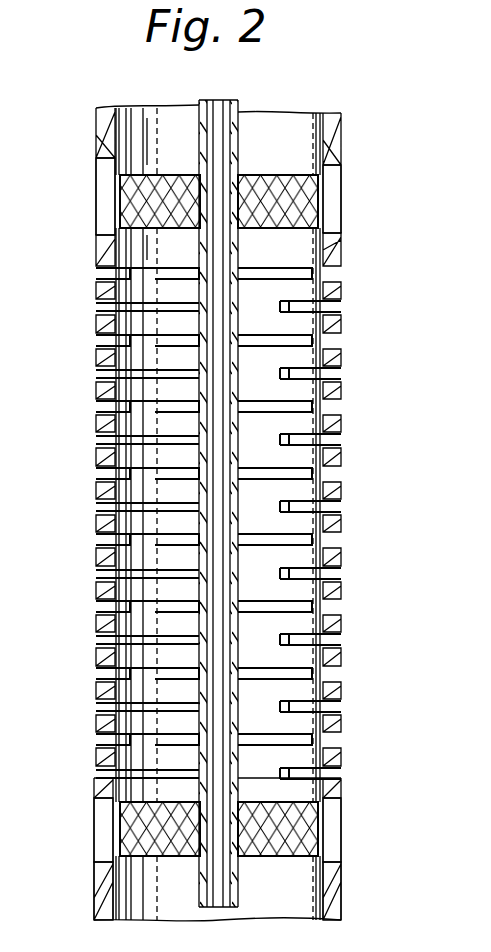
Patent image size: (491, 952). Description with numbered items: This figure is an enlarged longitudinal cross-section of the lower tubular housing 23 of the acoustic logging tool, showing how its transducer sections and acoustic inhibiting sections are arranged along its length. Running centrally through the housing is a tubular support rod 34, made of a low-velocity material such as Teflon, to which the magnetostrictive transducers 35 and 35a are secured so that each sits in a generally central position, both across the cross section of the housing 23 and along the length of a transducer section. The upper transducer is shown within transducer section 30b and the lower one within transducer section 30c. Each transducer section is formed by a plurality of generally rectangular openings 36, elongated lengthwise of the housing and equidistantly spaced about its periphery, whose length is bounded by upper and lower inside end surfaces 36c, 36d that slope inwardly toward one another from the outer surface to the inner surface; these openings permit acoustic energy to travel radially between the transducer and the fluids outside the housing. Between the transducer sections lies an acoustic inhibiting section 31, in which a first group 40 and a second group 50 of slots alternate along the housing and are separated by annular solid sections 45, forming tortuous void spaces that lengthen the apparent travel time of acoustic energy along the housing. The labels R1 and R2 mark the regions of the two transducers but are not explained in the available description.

The tubular support rod 34 is at (221, 99).
The magnetostrictive transducer 35 is at (266, 175).
The magnetostrictive transducer 35a is at (252, 857).
The transducer section 30b is at (344, 184).
The transducer section 30c is at (334, 824).
The opening 36 is at (333, 210).
The lower inside end surface 36d is at (333, 246).
The upper inside end surface 36c is at (344, 796).
The acoustic inhibiting section 31 is at (342, 392).
The lower tubular housing 23 is at (343, 463).
The first group of slots 40 is at (343, 541).
The annular solid section 45 is at (342, 557).
The second group of slots 50 is at (343, 578).
The upper region R1 is at (120, 200).
The lower region R2 is at (120, 828).